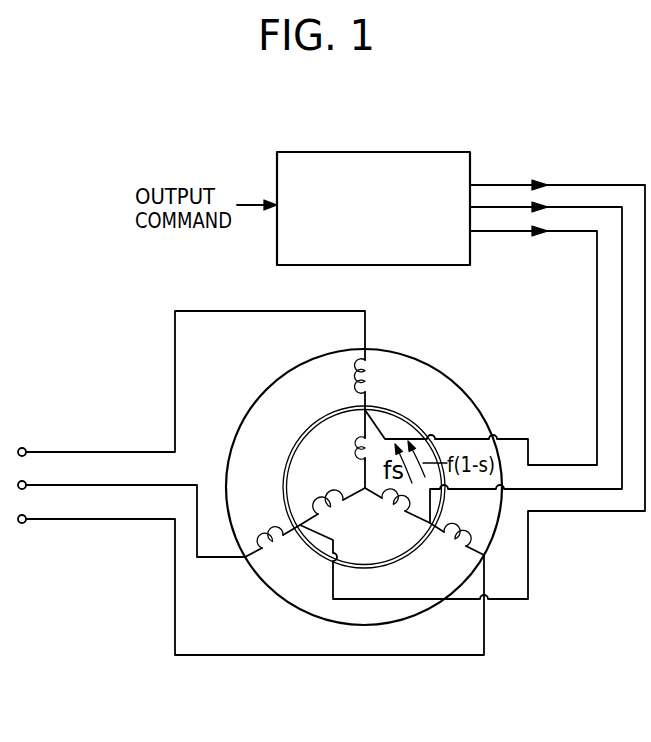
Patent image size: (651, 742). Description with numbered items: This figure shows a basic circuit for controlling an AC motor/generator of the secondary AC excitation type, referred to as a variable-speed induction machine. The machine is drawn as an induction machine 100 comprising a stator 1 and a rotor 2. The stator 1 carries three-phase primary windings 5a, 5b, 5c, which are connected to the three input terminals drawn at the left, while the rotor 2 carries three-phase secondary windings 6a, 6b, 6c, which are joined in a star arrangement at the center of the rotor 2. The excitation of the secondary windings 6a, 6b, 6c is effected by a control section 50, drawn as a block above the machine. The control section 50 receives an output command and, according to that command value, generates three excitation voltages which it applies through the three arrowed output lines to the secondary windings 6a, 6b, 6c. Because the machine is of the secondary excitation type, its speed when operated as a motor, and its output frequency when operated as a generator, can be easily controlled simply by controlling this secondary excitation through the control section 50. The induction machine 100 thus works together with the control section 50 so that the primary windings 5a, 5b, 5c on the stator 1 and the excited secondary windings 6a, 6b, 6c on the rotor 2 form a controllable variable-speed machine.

The stator 1 is at (462, 403).
The rotor 2 is at (307, 455).
The primary winding 5a is at (372, 378).
The primary winding 5b is at (451, 547).
The primary winding 5c is at (278, 549).
The secondary winding 6a is at (360, 452).
The secondary winding 6b is at (330, 500).
The secondary winding 6c is at (396, 512).
The control section 50 is at (415, 153).
The induction machine 100 is at (362, 530).